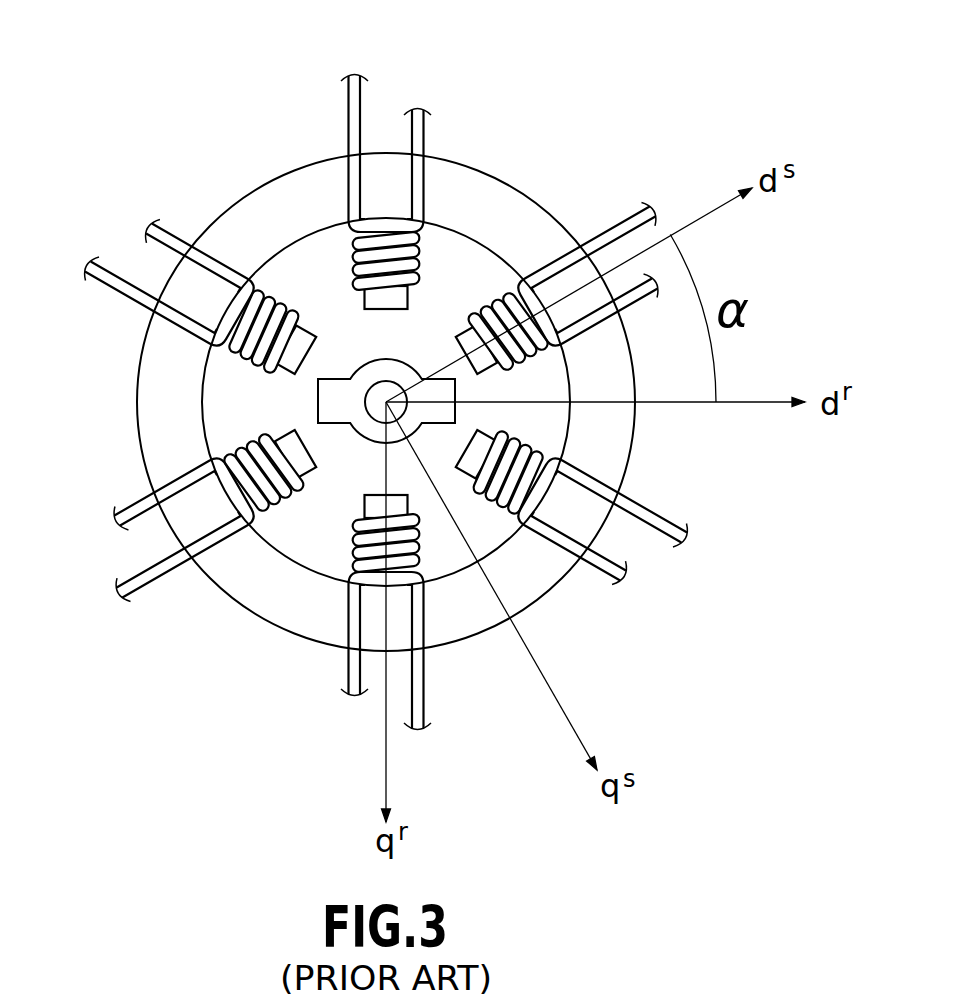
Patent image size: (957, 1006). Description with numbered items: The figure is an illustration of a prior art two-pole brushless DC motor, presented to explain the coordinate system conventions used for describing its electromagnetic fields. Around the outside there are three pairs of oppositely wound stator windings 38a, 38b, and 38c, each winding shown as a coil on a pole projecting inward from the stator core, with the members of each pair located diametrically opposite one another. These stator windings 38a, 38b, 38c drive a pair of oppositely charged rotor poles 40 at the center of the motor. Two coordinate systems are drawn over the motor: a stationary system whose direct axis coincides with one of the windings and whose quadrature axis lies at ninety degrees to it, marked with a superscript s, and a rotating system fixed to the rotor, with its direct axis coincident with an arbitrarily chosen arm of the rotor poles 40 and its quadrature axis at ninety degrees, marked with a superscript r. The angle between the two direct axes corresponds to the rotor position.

The stator winding 38a is at (326, 106).
The stator winding 38b is at (668, 202).
The stator winding 38c is at (116, 218).
The rotor poles 40 is at (318, 402).